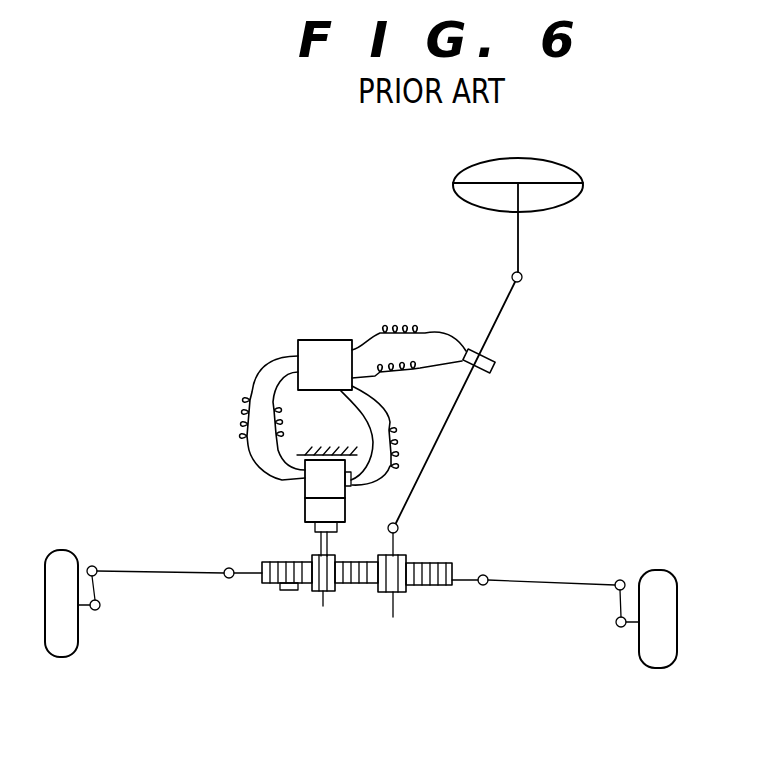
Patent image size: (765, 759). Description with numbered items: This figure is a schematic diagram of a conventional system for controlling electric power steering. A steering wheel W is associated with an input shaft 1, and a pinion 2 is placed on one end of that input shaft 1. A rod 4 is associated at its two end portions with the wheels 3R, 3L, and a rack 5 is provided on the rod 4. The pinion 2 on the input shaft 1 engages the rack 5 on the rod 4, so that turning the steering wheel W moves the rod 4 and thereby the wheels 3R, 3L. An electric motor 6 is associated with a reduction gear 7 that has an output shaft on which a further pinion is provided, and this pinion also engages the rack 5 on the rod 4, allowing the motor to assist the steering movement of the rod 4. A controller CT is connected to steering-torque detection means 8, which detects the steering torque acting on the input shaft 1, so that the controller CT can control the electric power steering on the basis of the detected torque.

The steering wheel W is at (583, 193).
The input shaft 1 is at (447, 424).
The steering-torque detection means 8 is at (494, 354).
The controller CT is at (351, 346).
The electric motor 6 is at (310, 487).
The reduction gear 7 is at (310, 512).
The pinion 2 is at (388, 593).
The rod 4 is at (446, 562).
The rack 5 is at (432, 593).
The wheel 3R is at (63, 652).
The wheel 3L is at (655, 660).